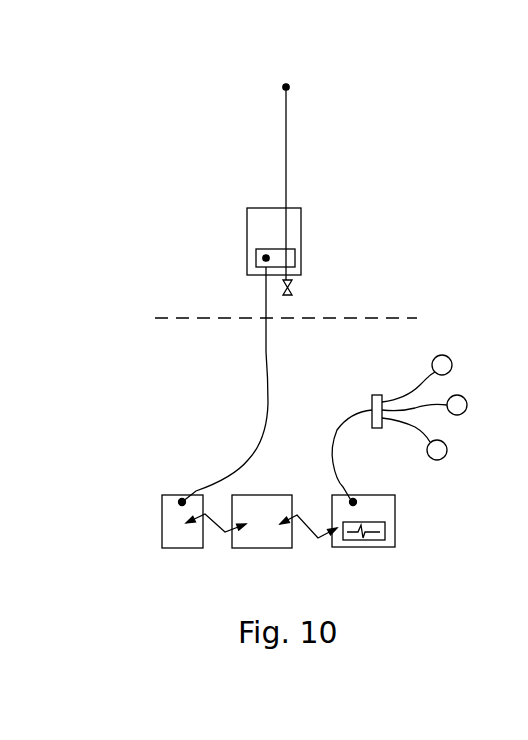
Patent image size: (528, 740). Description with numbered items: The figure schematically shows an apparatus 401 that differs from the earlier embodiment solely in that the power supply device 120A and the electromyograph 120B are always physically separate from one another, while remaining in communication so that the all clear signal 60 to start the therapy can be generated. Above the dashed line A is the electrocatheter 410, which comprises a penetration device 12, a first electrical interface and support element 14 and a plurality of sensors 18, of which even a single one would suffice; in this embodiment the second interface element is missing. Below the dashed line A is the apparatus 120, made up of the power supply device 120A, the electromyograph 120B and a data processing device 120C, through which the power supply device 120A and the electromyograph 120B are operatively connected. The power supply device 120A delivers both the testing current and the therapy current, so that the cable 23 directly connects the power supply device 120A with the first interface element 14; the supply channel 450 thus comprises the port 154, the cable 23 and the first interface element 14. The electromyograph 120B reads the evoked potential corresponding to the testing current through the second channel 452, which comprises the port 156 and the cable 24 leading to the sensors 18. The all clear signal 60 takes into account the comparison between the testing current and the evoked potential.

The apparatus 401 is at (152, 92).
The electrocatheter 410 is at (178, 200).
The penetration device 12 is at (283, 143).
The first electrical interface and support element 14 is at (247, 240).
The dashed line A is at (192, 318).
The supply channel 450 is at (252, 352).
The sensor cable region 452 is at (335, 405).
The cable 23 is at (258, 442).
The cable 24 is at (337, 463).
The sensors 18 is at (442, 365).
The port 154 is at (182, 502).
The port 156 is at (353, 502).
The apparatus 120 is at (249, 546).
The power supply device 120A is at (178, 538).
The electromyograph 120B is at (390, 545).
The data processing device 120C is at (263, 538).
The all clear signal 60 is at (357, 535).